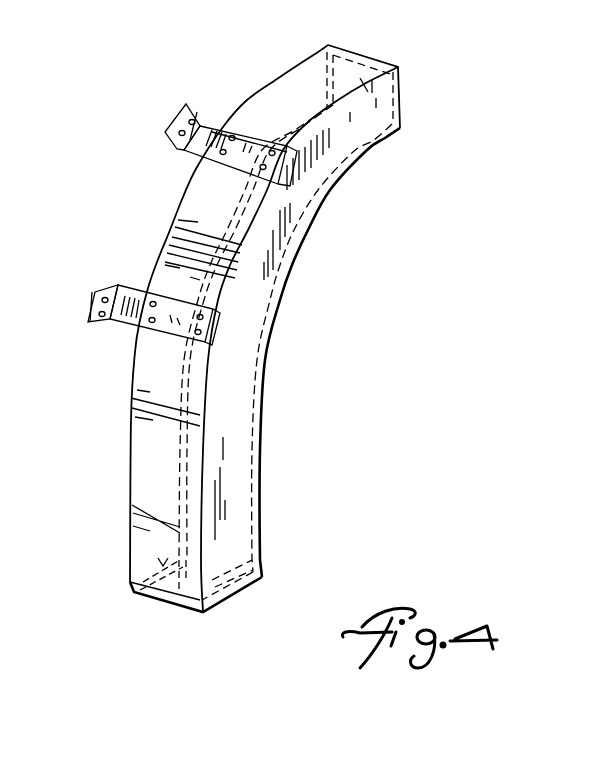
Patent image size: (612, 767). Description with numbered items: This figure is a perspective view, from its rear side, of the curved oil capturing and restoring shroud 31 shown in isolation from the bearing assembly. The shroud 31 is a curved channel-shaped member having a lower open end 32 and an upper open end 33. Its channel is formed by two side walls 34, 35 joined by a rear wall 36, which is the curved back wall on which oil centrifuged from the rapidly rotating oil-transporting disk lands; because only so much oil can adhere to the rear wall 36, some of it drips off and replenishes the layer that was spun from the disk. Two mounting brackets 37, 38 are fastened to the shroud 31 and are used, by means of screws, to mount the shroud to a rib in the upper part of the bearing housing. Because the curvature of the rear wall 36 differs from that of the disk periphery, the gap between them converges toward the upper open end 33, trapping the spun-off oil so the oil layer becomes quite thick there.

The curved oil capturing and restoring shroud 31 is at (265, 316).
The lower open end 32 is at (253, 552).
The upper open end 33 is at (367, 63).
The side wall 34 is at (163, 562).
The side wall 35 is at (227, 408).
The rear wall 36 is at (192, 206).
The mounting bracket 37 is at (133, 315).
The mounting bracket 38 is at (217, 117).